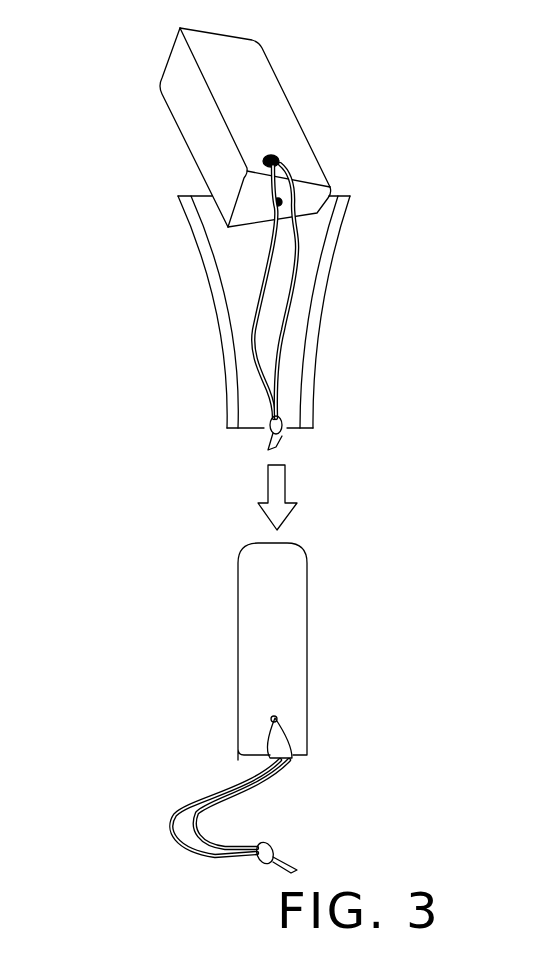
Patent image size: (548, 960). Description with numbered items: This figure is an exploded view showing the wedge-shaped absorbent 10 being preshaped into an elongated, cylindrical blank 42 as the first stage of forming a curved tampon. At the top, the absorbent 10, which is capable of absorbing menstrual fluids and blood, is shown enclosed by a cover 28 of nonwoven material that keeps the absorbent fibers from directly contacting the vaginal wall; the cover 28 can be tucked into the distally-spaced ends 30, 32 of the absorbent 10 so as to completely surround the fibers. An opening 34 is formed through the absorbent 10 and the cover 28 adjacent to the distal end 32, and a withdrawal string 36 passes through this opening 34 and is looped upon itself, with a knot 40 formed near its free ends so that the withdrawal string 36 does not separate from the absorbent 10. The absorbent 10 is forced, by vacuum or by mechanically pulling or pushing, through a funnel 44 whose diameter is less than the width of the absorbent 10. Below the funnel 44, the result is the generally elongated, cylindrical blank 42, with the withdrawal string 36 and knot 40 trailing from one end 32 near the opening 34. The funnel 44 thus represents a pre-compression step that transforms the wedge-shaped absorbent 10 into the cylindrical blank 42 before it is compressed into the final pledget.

The absorbent 10 is at (143, 128).
The cover 28 is at (263, 117).
The distally-spaced end 30 is at (235, 36).
The distal end 32 is at (305, 194).
The opening 34 is at (282, 716).
The withdrawal string 36 is at (222, 787).
The knot 40 is at (270, 842).
The cylindrical blank 42 is at (295, 612).
The funnel 44 is at (330, 268).